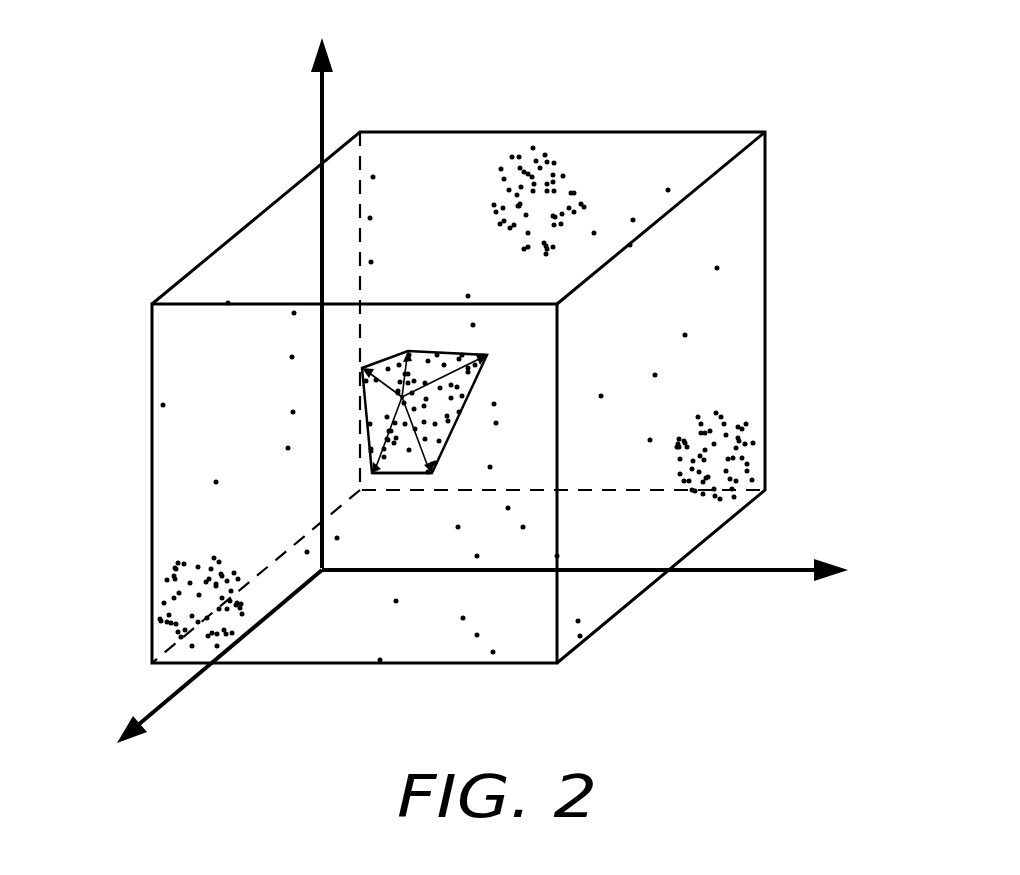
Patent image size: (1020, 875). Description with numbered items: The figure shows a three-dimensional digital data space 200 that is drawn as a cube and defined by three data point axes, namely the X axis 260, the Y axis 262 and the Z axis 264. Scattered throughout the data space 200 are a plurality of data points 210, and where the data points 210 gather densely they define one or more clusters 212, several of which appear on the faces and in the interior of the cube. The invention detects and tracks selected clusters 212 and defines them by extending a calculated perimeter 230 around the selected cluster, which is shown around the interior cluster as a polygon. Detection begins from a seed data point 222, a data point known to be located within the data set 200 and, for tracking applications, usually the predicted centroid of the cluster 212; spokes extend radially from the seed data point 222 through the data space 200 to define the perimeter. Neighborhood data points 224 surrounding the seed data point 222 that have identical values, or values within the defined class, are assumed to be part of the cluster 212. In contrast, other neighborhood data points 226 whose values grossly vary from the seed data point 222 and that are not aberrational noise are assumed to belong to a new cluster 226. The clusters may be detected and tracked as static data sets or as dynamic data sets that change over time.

The data space 200 is at (710, 126).
The data points 210 is at (247, 227).
The clusters 212 is at (549, 152).
The seed data point 222 is at (400, 396).
The neighborhood data points 224 is at (462, 366).
The neighborhood data points of a new cluster 226 is at (601, 396).
The calculated perimeter 230 is at (403, 477).
The X axis 260 is at (772, 574).
The Y axis 262 is at (188, 686).
The Z axis 264 is at (320, 97).